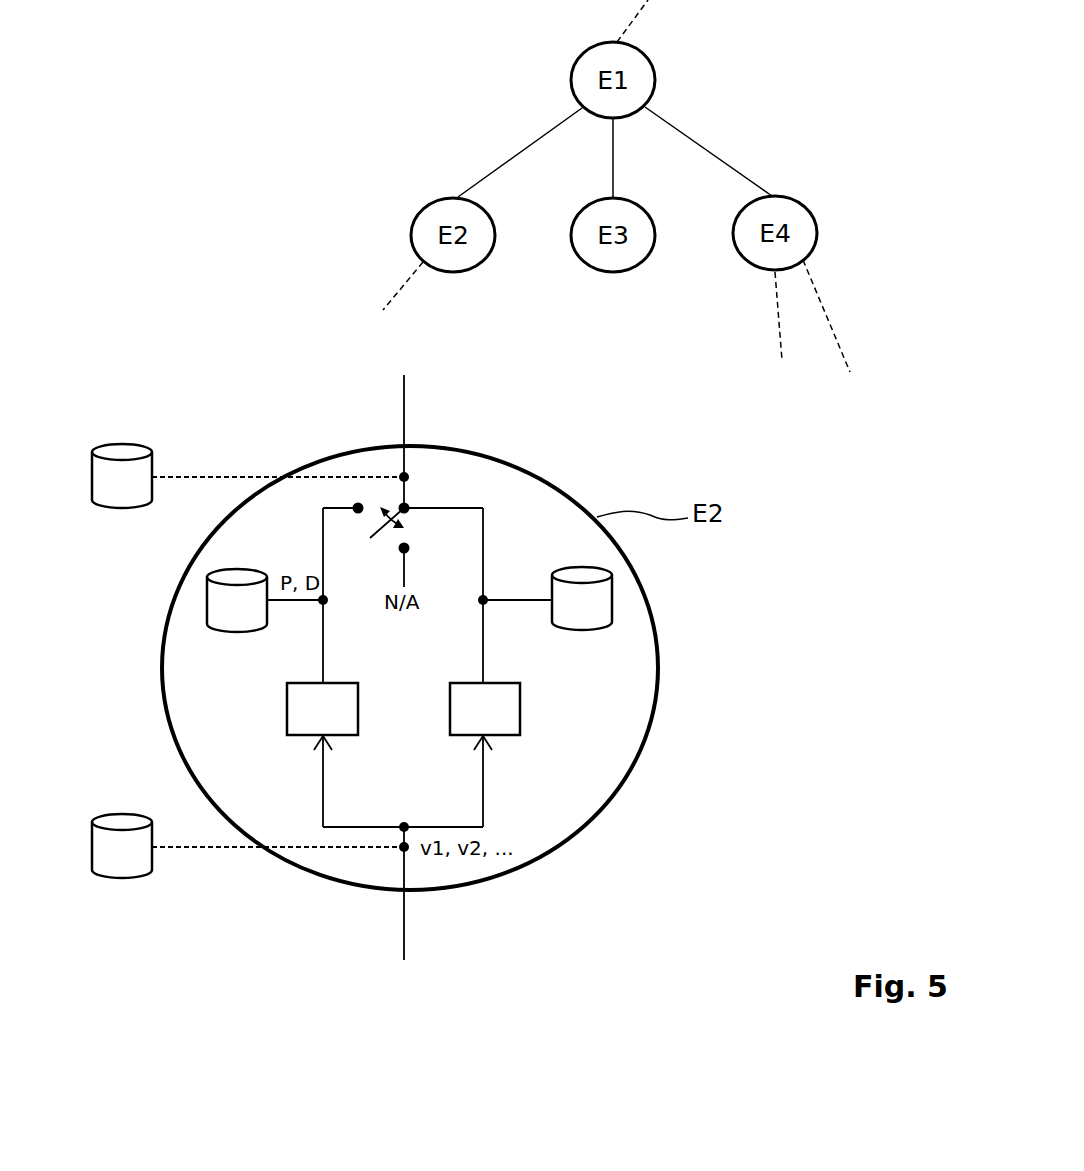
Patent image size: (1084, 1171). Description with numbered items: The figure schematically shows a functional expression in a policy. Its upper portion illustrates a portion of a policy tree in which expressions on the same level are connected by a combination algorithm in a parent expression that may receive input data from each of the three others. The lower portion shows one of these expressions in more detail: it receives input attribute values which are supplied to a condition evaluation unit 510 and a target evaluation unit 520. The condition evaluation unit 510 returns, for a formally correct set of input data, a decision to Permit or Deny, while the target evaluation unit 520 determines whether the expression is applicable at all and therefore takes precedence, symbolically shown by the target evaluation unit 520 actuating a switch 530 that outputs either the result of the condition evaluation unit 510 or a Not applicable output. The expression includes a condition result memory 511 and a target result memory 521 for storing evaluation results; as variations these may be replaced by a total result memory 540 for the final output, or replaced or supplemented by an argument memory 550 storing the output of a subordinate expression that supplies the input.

The condition evaluation unit 510 is at (287, 712).
The condition result memory 511 is at (207, 585).
The target evaluation unit 520 is at (520, 708).
The second data store 521 is at (612, 588).
The switch 530 is at (409, 506).
The total result memory 540 is at (140, 447).
The argument memory 550 is at (147, 875).